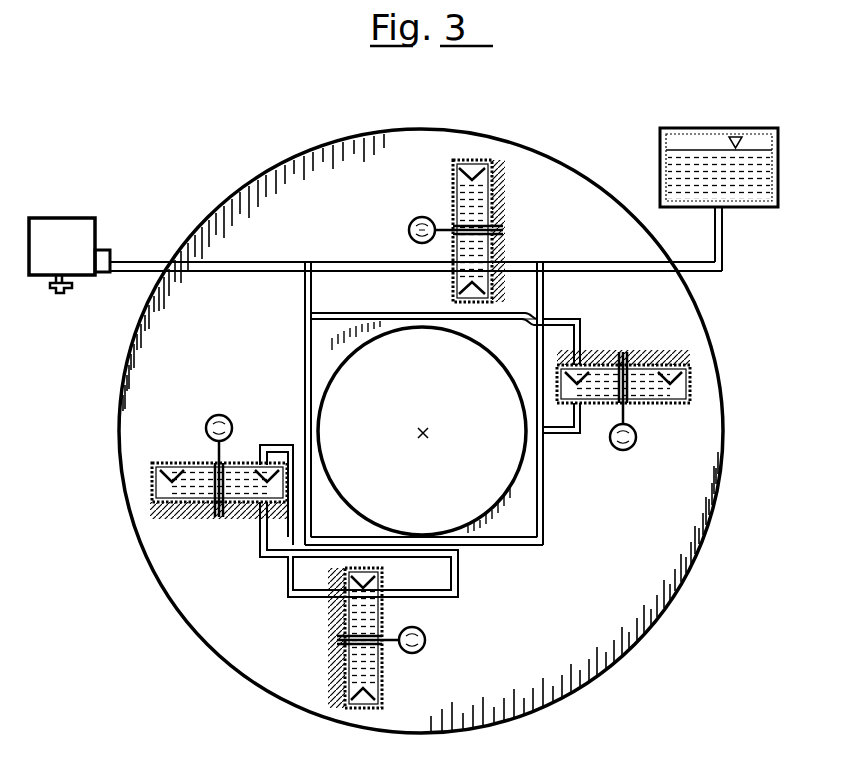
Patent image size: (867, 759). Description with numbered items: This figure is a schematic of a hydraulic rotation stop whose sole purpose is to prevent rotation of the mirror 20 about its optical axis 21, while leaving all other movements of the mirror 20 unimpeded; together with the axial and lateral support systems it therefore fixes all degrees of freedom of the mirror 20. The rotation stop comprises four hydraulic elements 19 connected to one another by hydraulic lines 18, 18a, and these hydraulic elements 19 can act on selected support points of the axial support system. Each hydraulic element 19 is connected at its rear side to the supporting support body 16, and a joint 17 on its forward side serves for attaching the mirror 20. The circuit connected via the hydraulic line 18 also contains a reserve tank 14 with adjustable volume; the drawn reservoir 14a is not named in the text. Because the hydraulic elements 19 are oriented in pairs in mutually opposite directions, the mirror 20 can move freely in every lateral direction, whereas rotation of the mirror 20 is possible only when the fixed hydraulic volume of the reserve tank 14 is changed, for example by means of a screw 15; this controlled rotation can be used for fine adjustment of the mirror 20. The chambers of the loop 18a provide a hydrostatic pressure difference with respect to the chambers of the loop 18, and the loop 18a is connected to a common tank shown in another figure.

The reserve tank 14 is at (82, 235).
The reservoir tank 14a is at (750, 194).
The screw 15 is at (54, 296).
The support body 16 is at (500, 186).
The joint 17 is at (411, 226).
The hydraulic line 18 is at (320, 262).
The hydraulic line loop 18a is at (540, 508).
The hydraulic element 19 is at (463, 202).
The mirror 20 is at (700, 455).
The optical axis 21 is at (426, 434).